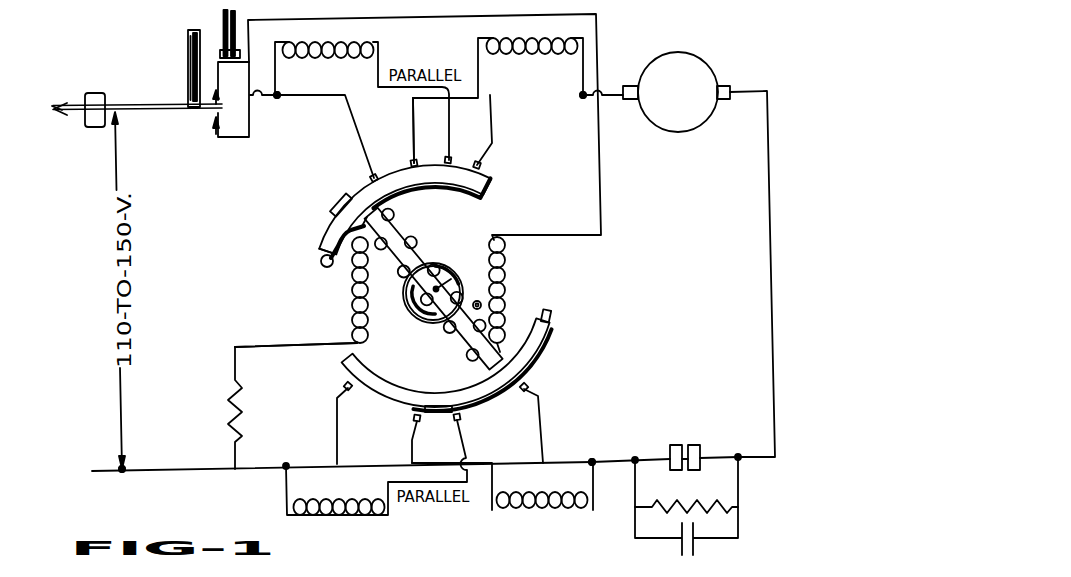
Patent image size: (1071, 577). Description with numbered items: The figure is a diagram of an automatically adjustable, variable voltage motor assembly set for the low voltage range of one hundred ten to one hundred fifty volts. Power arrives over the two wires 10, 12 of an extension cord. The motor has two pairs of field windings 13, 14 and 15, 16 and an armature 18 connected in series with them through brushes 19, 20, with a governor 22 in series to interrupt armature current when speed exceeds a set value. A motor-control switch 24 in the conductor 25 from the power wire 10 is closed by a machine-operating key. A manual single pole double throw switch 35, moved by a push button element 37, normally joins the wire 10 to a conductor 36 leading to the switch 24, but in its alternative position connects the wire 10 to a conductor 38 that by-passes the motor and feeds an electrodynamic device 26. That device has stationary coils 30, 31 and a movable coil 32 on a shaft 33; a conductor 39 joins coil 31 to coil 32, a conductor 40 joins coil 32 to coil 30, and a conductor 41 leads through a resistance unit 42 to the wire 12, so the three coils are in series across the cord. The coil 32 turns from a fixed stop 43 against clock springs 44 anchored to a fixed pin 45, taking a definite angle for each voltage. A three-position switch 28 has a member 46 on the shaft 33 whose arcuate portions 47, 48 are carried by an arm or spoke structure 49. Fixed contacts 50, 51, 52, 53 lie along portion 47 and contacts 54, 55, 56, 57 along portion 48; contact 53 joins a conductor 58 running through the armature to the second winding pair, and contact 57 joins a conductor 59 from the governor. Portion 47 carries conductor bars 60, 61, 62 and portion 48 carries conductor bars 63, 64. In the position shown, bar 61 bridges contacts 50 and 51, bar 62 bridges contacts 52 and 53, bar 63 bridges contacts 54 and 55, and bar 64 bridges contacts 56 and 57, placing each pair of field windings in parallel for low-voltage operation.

The power wire 10 is at (59, 106).
The lead-in wire 12 is at (103, 470).
The field winding 13 is at (368, 44).
The field winding 14 is at (575, 38).
The field winding 15 is at (384, 510).
The field winding 16 is at (513, 512).
The armature 18 is at (697, 55).
The brush 19 is at (627, 88).
The brush 20 is at (742, 91).
The governor 22 is at (676, 445).
The motor-control switch 24 is at (215, 25).
The conductor 25 is at (277, 97).
The electrodynamic device 26 is at (444, 328).
The three-position switch 28 is at (360, 188).
The stationary coil 30 is at (352, 311).
The stationary coil 31 is at (505, 265).
The movable coil 32 is at (389, 224).
The shaft 33 is at (456, 278).
The single pole double throw switch 35 is at (151, 106).
The conductor 36 is at (216, 70).
The push button element 37 is at (188, 55).
The conductor 38 is at (249, 138).
The conductor 39 is at (503, 325).
The conductor 40 is at (349, 229).
The conductor 41 is at (296, 345).
The resistance unit 42 is at (226, 410).
The fixed stop 43 is at (323, 265).
The spring 44 is at (406, 314).
The fixed pin 45 is at (478, 301).
The member 46 is at (494, 364).
The arcuate portion 47 is at (324, 255).
The arcuate portion 48 is at (553, 319).
The arm or spoke structure 49 is at (468, 349).
The fixed contact 50 is at (371, 173).
The fixed contact 51 is at (411, 160).
The fixed contact 52 is at (448, 157).
The fixed contact 53 is at (488, 171).
The contact 54 is at (344, 386).
The contact 55 is at (413, 421).
The contact 56 is at (455, 421).
The contact 57 is at (522, 390).
The conductor 58 is at (589, 97).
The conductor 59 is at (605, 462).
The conductor bar 60 is at (336, 208).
The conductor bar 61 is at (385, 152).
The conductor bar 62 is at (475, 163).
The conductor bar 63 is at (380, 396).
The conductor bar 64 is at (546, 377).